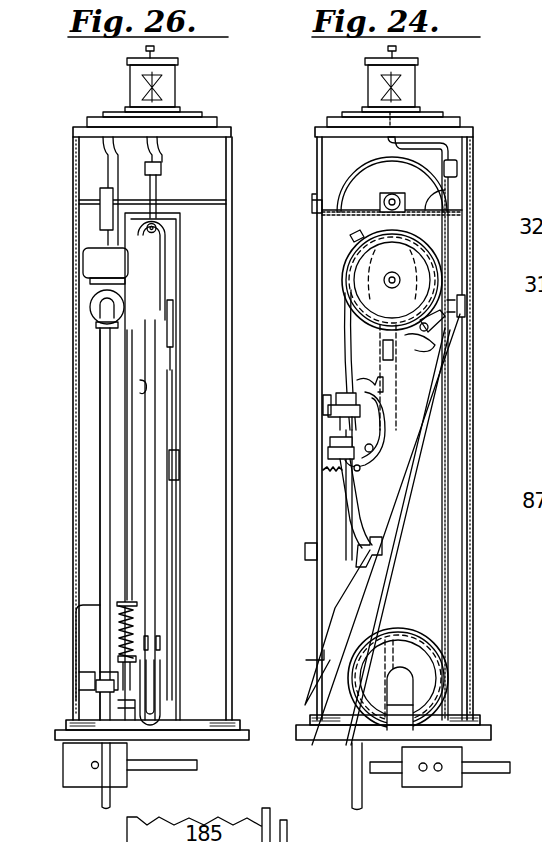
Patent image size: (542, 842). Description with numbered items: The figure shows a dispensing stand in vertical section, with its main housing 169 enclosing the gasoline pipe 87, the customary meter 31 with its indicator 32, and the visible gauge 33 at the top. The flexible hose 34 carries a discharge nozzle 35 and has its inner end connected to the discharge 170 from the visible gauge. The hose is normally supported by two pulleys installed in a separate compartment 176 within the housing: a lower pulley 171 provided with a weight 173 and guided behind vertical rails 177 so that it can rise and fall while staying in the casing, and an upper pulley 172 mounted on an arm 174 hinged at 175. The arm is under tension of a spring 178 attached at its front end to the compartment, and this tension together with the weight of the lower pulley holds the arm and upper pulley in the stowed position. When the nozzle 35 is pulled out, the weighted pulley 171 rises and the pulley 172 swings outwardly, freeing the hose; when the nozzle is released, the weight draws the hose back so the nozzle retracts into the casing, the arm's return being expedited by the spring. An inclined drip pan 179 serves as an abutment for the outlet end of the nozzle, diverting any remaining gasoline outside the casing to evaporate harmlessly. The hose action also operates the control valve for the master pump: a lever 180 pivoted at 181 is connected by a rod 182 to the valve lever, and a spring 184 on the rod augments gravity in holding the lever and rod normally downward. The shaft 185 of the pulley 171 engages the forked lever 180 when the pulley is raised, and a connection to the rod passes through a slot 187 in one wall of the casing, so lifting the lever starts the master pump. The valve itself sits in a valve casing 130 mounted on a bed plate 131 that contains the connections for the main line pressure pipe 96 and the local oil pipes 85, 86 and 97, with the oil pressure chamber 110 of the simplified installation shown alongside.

In FIG. 26, the meter 31 is at (92, 266).
In FIG. 26, the indicator 32 is at (73, 190).
In FIG. 24, the indicator 32 is at (362, 182).
In FIG. 26, the visible gauge 33 is at (132, 85).
In FIG. 24, the visible gauge 33 is at (408, 86).
In FIG. 26, the flexible hose 34 is at (152, 534).
In FIG. 24, the flexible hose 34 is at (348, 337).
In FIG. 24, the discharge nozzle 35 is at (338, 424).
In FIG. 24, the oil pipe connection 85 is at (440, 772).
In FIG. 26, the oil pipe connection 86 is at (198, 766).
In FIG. 24, the oil pipe connection 86 is at (422, 772).
In FIG. 26, the gasoline pipe 87 is at (106, 495).
In FIG. 24, the main line pressure pipe 96 is at (500, 774).
In FIG. 26, the oil pressure pipe 97 is at (91, 766).
In FIG. 24, the oil pressure pipe 97 is at (383, 774).
In FIG. 26, the oil pressure chamber 110 is at (82, 634).
In FIG. 26, the valve casing 130 is at (88, 705).
In FIG. 26, the bed plate 131 is at (80, 778).
In FIG. 24, the bed plate 131 is at (462, 788).
In FIG. 26, the main housing 169 is at (232, 388).
In FIG. 24, the main housing 169 is at (473, 418).
In FIG. 26, the discharge 170 is at (158, 170).
In FIG. 24, the discharge 170 is at (455, 155).
In FIG. 26, the pulley 171 is at (157, 648).
In FIG. 24, the pulley 171 is at (410, 640).
In FIG. 26, the pulley 172 is at (154, 256).
In FIG. 24, the pulley 172 is at (358, 278).
In FIG. 24, the weight 173 is at (412, 712).
In FIG. 26, the arm 174 is at (168, 422).
In FIG. 24, the arm 174 is at (373, 362).
In FIG. 24, the hinge 175 is at (374, 449).
In FIG. 26, the compartment 176 is at (180, 234).
In FIG. 24, the compartment 176 is at (424, 210).
In FIG. 24, the vertical rails 177 is at (392, 560).
In FIG. 24, the spring 178 is at (333, 473).
In FIG. 24, the inclined drip pan 179 is at (333, 604).
In FIG. 26, the lever 180 is at (170, 325).
In FIG. 24, the lever 180 is at (425, 347).
In FIG. 24, the pivot 181 is at (463, 311).
In FIG. 26, the rod 182 is at (126, 546).
In FIG. 26, the spring 184 is at (116, 633).
In FIG. 24, the shaft 185 is at (404, 678).
In FIG. 24, the slot 187 is at (430, 333).